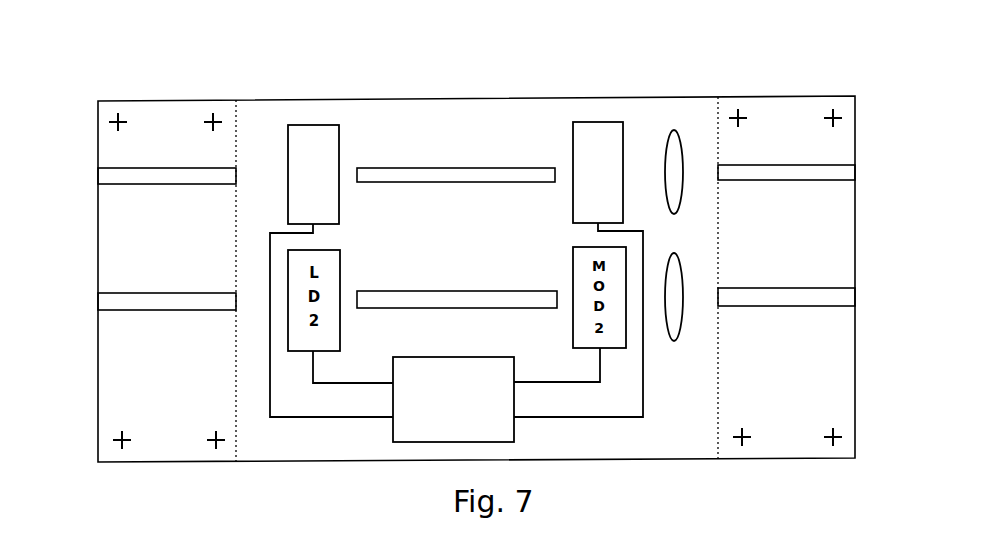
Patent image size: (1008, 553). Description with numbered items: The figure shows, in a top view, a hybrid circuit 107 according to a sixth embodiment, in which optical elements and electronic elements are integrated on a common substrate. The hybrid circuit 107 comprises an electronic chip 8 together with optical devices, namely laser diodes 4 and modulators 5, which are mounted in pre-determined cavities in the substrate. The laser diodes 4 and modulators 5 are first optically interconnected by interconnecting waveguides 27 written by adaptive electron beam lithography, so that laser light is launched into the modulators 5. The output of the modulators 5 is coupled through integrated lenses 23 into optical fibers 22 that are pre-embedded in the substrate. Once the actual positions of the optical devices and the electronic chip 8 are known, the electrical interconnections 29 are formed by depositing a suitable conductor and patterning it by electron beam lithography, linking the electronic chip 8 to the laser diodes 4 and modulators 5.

The laser diode 4 is at (313, 130).
The modulator 5 is at (597, 130).
The electronic chip 8 is at (429, 433).
The optical fibers 22 is at (847, 172).
The integrated lenses 23 is at (674, 130).
The interconnecting waveguides 27 is at (452, 172).
The electrical interconnections 29 is at (582, 417).
The hybrid circuit 107 is at (116, 234).